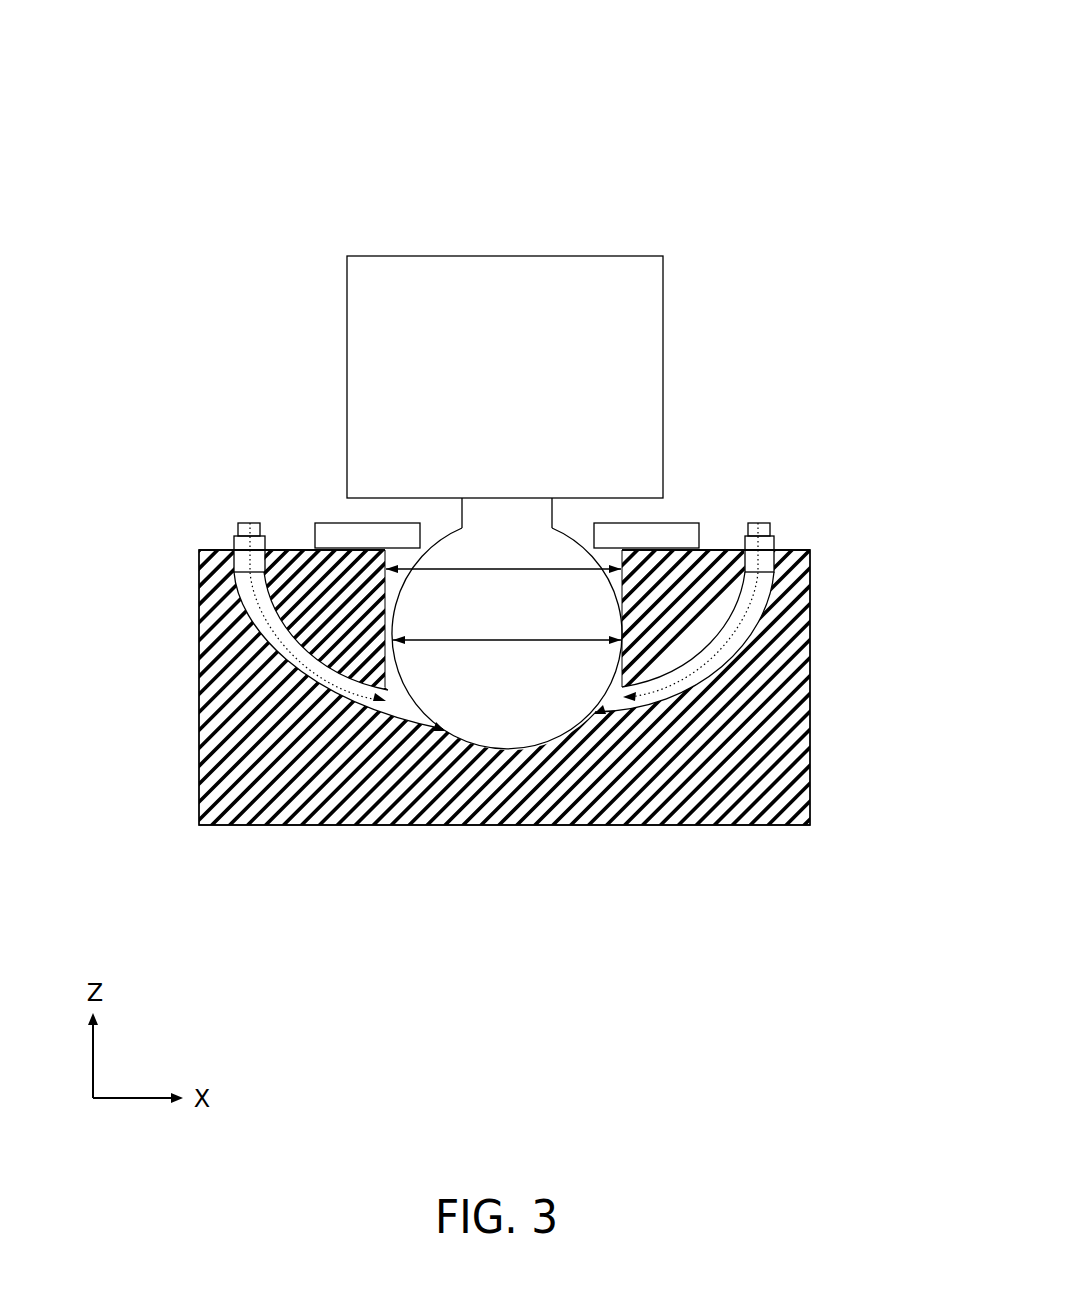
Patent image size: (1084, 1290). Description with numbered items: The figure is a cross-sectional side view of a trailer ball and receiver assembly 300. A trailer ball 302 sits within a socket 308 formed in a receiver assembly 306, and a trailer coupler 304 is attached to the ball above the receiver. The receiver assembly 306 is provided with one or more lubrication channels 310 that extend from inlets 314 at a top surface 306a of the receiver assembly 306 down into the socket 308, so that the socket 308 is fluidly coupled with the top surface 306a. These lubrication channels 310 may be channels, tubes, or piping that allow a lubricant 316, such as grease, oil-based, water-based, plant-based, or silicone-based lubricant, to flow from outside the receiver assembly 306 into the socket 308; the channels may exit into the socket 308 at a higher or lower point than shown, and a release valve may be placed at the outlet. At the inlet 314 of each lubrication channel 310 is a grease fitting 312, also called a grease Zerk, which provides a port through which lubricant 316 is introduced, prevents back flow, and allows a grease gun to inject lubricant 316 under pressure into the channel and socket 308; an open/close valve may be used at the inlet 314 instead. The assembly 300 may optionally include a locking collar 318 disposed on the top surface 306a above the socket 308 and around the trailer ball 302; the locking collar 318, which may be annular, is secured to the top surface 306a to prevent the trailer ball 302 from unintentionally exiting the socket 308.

The trailer ball and receiver assembly 300 is at (275, 106).
The trailer ball 302 is at (542, 705).
The trailer coupler 304 is at (647, 328).
The receiver assembly 306 is at (213, 702).
The top surface 306a is at (800, 550).
The socket 308 is at (403, 807).
The lubrication channel 310 is at (770, 594).
The grease fitting 312 is at (200, 567).
The inlet 314 is at (772, 574).
The lubricant 316 is at (757, 523).
The locking collar 318 is at (340, 528).